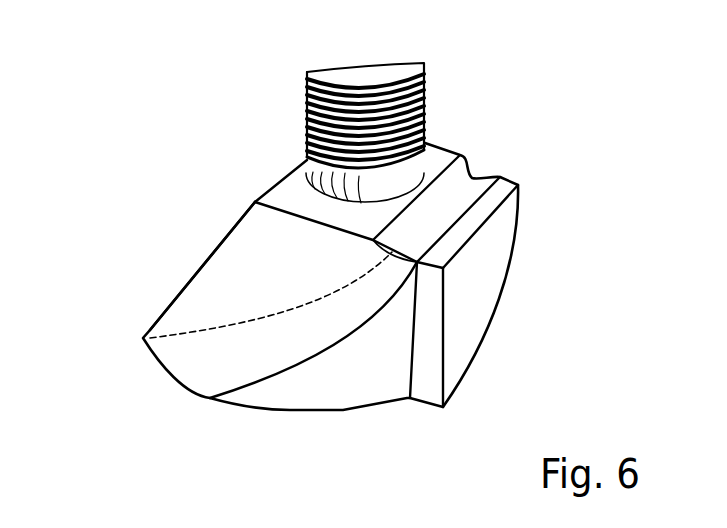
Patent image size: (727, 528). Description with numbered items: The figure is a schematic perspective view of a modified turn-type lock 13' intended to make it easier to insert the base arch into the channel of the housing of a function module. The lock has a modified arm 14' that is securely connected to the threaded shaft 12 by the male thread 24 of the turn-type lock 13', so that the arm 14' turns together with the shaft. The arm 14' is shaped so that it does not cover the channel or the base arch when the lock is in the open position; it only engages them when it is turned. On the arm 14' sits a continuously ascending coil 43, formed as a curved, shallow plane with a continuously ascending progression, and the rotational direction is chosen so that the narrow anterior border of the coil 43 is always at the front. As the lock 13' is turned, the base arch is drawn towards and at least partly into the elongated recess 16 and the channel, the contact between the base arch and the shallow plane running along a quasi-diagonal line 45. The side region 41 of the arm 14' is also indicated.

The threaded shaft 12 is at (294, 131).
The male thread 24 is at (305, 88).
The elongated recess 16 is at (462, 186).
The continuously ascending coil 43 is at (228, 300).
The side edge 41 is at (170, 293).
The modified turn-type lock 13' is at (272, 276).
The modified arm 14' is at (397, 334).
The quasi-diagonal line 45 is at (210, 333).